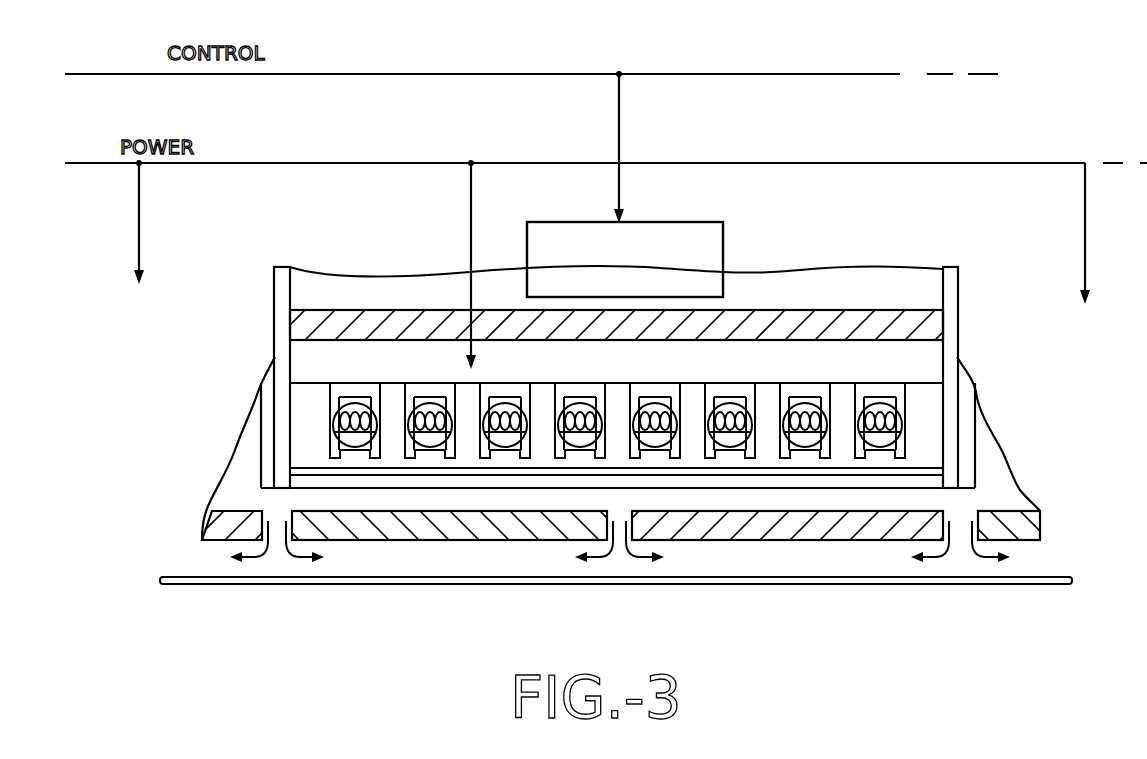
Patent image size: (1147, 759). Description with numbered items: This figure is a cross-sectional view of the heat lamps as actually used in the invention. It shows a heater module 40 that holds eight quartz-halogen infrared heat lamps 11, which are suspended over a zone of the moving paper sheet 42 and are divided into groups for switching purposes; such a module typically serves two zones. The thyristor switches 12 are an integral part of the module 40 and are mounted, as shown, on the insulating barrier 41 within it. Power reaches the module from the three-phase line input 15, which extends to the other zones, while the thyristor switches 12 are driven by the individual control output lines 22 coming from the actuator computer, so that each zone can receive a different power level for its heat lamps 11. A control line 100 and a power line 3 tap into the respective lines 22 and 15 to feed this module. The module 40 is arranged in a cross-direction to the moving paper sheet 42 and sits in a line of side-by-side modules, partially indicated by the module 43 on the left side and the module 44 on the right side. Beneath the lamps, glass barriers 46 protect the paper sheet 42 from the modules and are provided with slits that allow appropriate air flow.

The control line 100 is at (392, 90).
The control output lines 22 is at (194, 75).
The three-phase line input 15 is at (101, 163).
The power lines 3 is at (258, 178).
The thyristor switches 12 is at (724, 251).
The heater module 40 is at (838, 378).
The insulating barrier 41 is at (822, 312).
The heat lamps 11 is at (355, 437).
The module on the left side 43 is at (232, 450).
The module on the right side 44 is at (1024, 476).
The glass barriers 46 is at (697, 541).
The moving paper sheet 42 is at (275, 587).